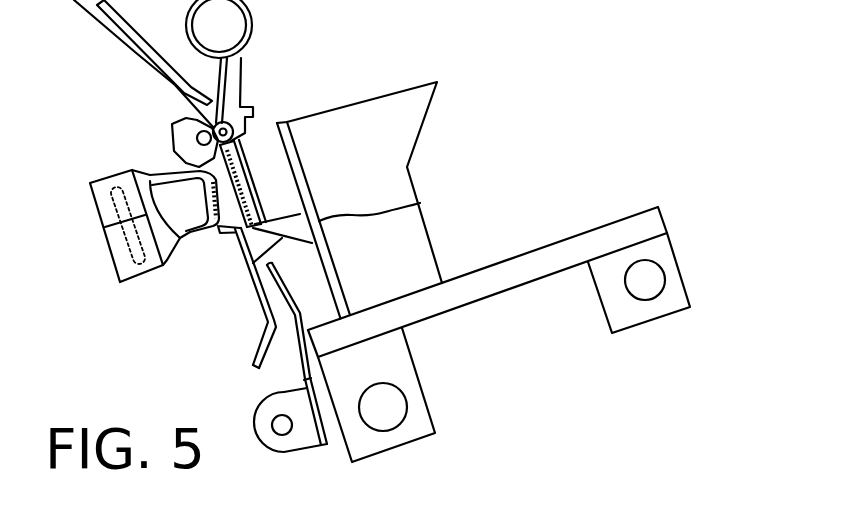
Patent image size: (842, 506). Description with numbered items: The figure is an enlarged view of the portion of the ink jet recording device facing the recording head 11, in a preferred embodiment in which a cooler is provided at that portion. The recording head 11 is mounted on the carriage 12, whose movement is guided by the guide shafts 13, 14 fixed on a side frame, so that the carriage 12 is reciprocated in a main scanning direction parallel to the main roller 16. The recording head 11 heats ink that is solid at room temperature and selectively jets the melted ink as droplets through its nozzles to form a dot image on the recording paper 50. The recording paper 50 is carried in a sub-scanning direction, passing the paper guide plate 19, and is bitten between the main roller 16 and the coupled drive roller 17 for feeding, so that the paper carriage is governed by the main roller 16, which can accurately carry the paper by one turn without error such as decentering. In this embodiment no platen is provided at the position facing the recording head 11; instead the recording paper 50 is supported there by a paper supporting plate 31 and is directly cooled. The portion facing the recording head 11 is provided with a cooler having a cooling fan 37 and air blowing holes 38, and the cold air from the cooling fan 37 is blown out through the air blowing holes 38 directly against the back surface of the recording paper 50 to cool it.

The recording head 11 is at (267, 142).
The carriage 12 is at (550, 257).
The guide shaft 13 is at (390, 423).
The guide shaft 14 is at (645, 295).
The main roller 16 is at (198, 137).
The coupled drive roller 17 is at (240, 90).
The paper guide plate 19 is at (282, 238).
The paper supporting plate 31 is at (267, 266).
The cooling fan 37 is at (112, 178).
The air blowing holes 38 is at (202, 190).
The recording paper 50 is at (229, 229).